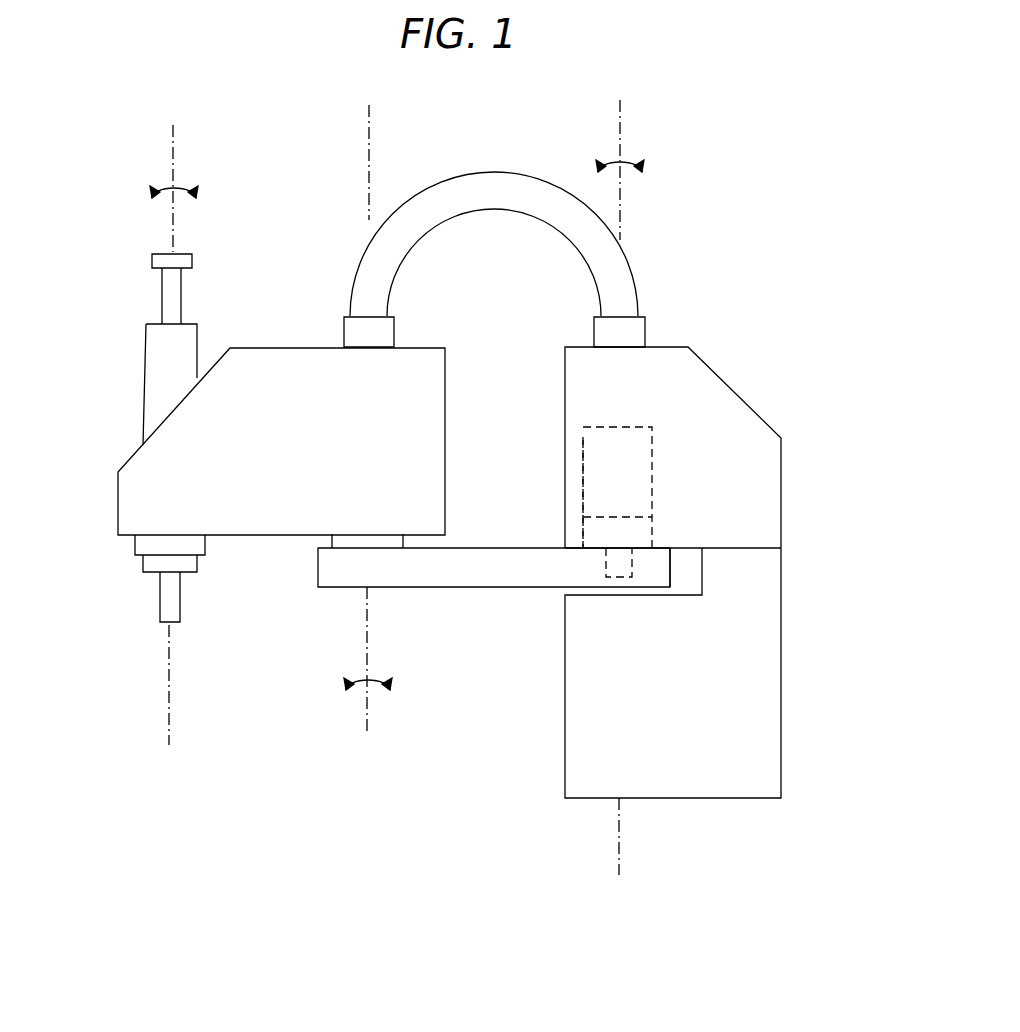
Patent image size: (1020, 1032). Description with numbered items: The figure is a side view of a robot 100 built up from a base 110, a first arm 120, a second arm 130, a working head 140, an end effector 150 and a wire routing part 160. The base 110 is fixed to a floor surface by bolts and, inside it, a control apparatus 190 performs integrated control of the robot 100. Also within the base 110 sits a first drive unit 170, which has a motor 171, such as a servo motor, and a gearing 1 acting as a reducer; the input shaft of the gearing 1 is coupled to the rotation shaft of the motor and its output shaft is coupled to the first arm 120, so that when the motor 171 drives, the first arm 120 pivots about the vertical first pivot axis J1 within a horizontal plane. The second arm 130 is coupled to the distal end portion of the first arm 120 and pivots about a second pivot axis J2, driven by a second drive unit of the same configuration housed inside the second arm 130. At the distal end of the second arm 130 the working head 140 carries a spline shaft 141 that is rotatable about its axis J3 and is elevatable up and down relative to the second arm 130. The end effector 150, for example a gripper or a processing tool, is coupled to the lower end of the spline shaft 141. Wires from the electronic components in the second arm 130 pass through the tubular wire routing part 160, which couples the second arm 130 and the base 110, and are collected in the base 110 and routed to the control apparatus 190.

The robot 100 is at (682, 141).
The base 110 is at (781, 668).
The first arm 120 is at (433, 586).
The second arm 130 is at (448, 381).
The working head 140 is at (143, 365).
The spline shaft 141 is at (168, 290).
The end effector 150 is at (160, 600).
The wire routing part 160 is at (470, 188).
The first drive unit 170 is at (583, 432).
The motor 171 is at (583, 470).
The control apparatus 190 is at (680, 724).
The gearing 1 is at (583, 530).
The first pivot axis J1 is at (620, 124).
The second pivot axis J2 is at (367, 712).
The axis J3 is at (173, 150).